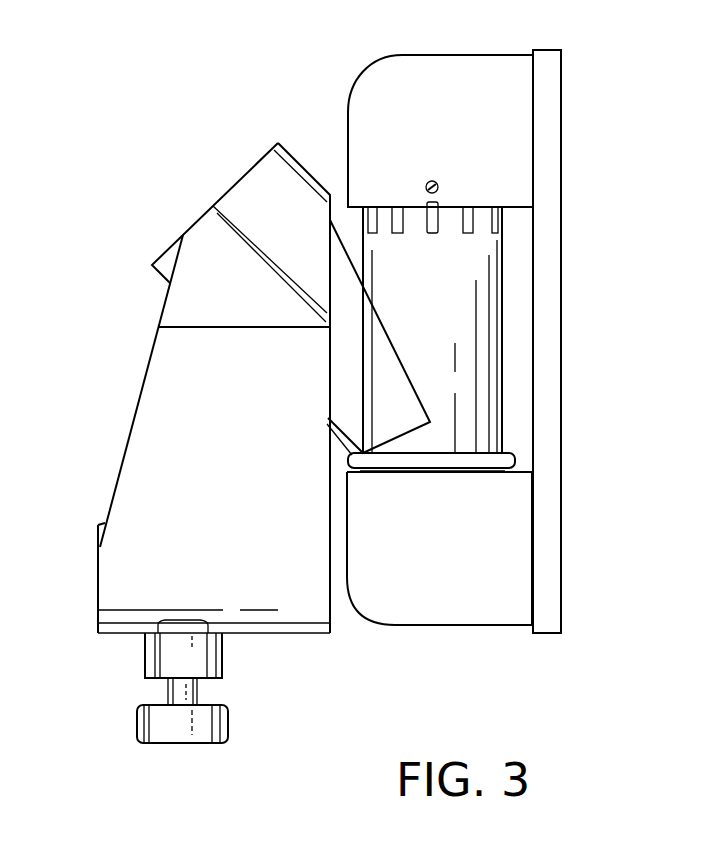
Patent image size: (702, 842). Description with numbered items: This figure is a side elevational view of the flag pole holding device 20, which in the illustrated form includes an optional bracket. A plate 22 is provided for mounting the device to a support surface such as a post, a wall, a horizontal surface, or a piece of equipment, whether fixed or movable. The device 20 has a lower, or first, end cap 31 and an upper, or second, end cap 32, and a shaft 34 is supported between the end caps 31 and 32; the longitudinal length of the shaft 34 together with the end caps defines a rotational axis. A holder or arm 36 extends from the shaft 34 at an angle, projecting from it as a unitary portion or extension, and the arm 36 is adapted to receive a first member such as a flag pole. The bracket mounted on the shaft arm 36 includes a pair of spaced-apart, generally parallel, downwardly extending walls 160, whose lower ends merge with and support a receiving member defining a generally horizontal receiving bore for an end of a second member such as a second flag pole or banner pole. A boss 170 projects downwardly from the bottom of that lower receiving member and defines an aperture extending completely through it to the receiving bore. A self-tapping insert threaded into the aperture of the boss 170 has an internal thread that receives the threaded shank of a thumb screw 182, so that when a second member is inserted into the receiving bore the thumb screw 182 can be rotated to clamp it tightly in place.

The device 20 is at (128, 168).
The plate 22 is at (556, 45).
The first end cap 31 is at (430, 634).
The second end cap 32 is at (494, 50).
The shaft 34 is at (512, 290).
The arm 36 is at (375, 332).
The walls 160 is at (148, 415).
The boss 170 is at (222, 665).
The thumb screw 182 is at (228, 722).